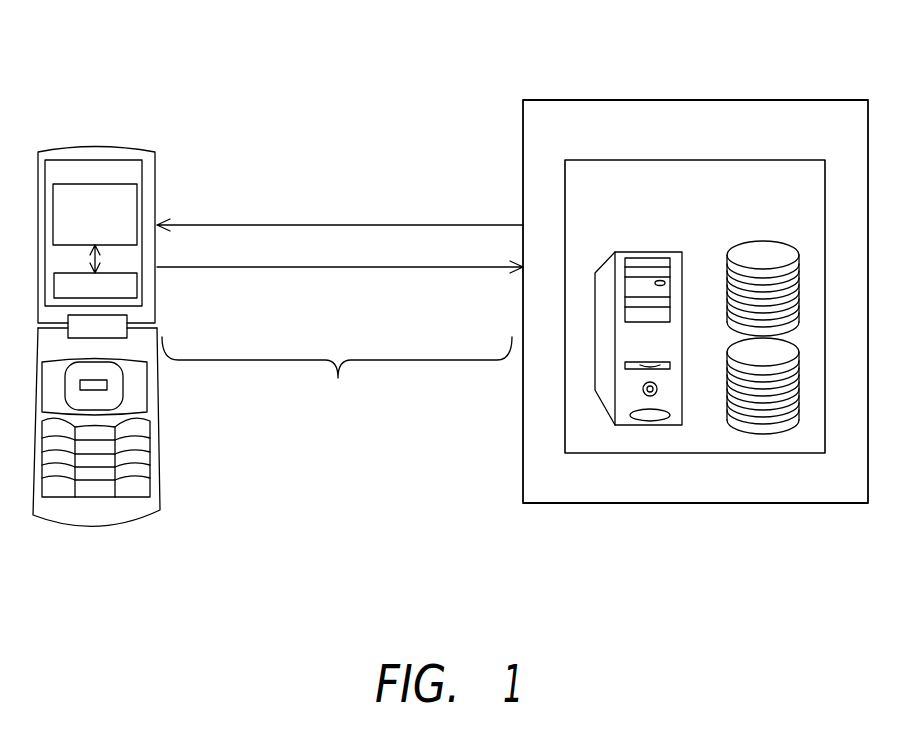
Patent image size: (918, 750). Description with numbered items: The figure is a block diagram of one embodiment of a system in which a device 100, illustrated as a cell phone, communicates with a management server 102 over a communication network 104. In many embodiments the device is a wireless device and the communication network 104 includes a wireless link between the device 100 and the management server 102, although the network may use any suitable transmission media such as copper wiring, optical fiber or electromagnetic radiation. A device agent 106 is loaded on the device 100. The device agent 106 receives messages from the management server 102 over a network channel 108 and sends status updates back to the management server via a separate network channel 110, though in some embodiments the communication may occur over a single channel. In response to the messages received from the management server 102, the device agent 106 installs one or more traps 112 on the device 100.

The device 100 is at (608, 100).
The management server 102 is at (145, 318).
The communication network 104 is at (337, 372).
The device agent 106 is at (97, 190).
The network channel 108 is at (350, 225).
The network channel 110 is at (240, 267).
The trap 112 is at (137, 287).